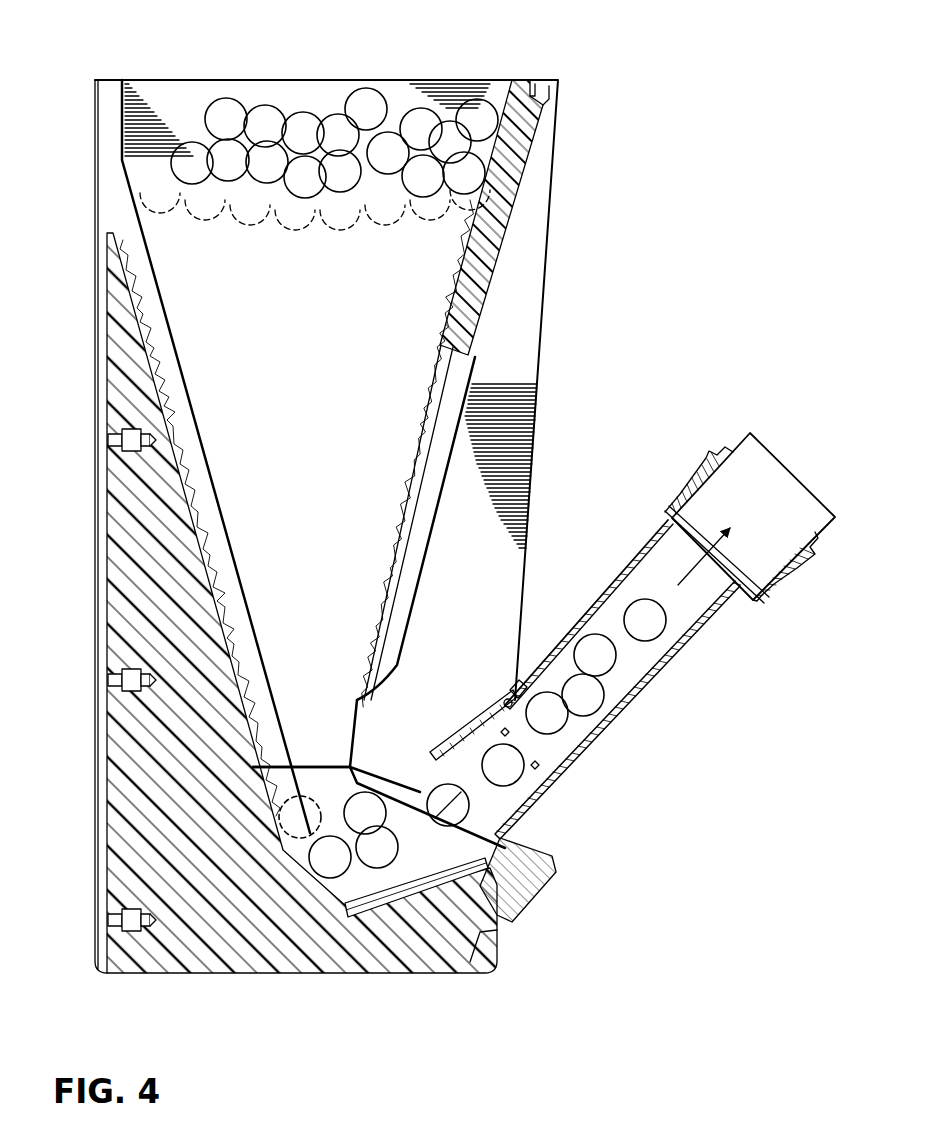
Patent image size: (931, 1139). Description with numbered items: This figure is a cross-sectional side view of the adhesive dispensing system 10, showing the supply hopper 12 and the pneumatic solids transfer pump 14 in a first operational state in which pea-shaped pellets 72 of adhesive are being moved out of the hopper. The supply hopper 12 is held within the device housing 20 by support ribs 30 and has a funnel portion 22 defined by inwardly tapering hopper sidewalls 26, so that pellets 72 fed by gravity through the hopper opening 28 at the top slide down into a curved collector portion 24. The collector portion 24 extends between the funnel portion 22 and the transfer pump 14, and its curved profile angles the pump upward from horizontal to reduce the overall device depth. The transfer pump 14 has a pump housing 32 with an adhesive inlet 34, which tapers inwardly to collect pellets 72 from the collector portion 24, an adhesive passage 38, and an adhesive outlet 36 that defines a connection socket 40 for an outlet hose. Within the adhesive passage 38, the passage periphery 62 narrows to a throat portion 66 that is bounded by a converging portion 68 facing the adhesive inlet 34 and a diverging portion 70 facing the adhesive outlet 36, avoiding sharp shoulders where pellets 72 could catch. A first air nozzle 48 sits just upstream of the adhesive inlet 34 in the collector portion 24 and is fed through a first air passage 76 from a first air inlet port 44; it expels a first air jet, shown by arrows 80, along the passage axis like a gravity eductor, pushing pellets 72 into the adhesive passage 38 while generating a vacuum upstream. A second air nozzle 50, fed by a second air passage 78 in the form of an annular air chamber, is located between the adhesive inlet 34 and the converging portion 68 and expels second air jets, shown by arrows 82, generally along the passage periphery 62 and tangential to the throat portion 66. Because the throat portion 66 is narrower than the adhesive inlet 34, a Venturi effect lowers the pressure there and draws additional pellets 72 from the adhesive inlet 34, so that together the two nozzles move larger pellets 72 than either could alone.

The adhesive dispensing system 10 is at (715, 375).
The supply hopper 12 is at (100, 430).
The pneumatic solids transfer pump 14 is at (612, 636).
The device housing 20 is at (495, 290).
The funnel portion 22 is at (336, 78).
The collector portion 24 is at (307, 815).
The hopper sidewalls 26 is at (285, 88).
The hopper opening 28 is at (176, 78).
The support ribs 30 is at (118, 520).
The pump housing 32 is at (567, 632).
The adhesive inlet 34 is at (405, 770).
The adhesive outlet 36 is at (760, 430).
The adhesive passage 38 is at (648, 580).
The connection socket 40 is at (668, 512).
The first air inlet port 44 is at (540, 880).
The first air nozzle 48 is at (362, 920).
The second air nozzle 50 is at (493, 715).
The passage periphery 62 is at (563, 672).
The throat portion 66 is at (590, 755).
The converging portion 68 is at (518, 688).
The diverging portion 70 is at (677, 665).
The pellets 72 is at (258, 110).
The first air passage 76 is at (468, 940).
The second air passage 78 is at (447, 740).
The arrows 80 is at (735, 530).
The arrows 82 is at (503, 700).